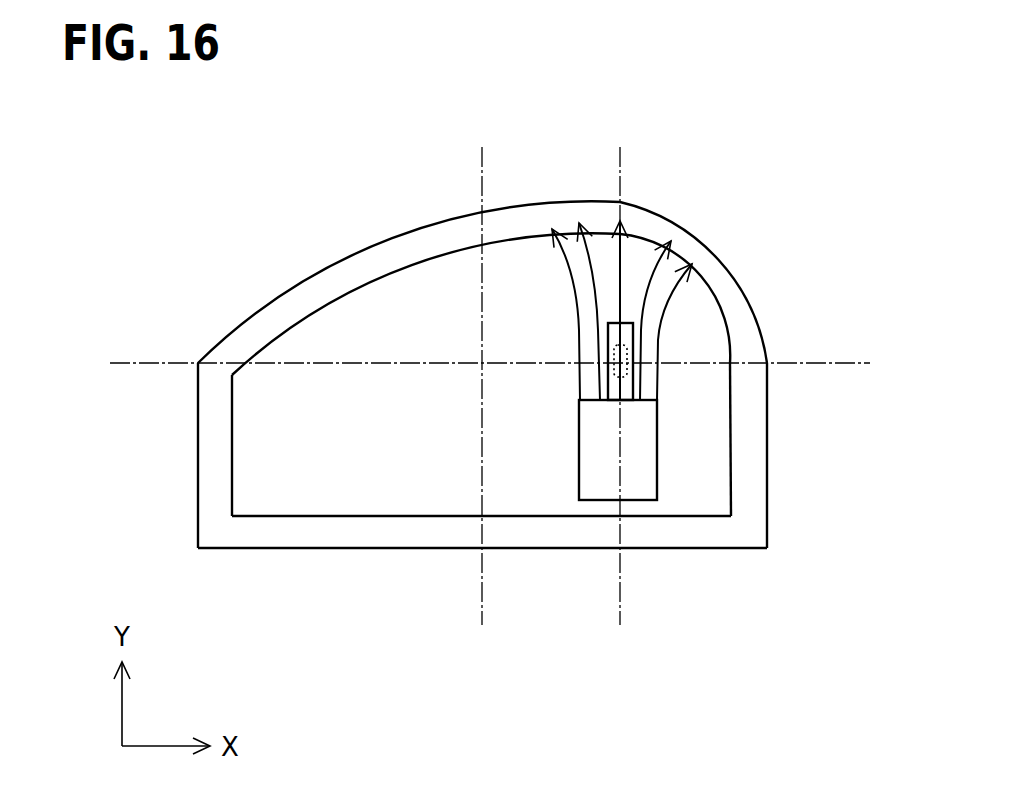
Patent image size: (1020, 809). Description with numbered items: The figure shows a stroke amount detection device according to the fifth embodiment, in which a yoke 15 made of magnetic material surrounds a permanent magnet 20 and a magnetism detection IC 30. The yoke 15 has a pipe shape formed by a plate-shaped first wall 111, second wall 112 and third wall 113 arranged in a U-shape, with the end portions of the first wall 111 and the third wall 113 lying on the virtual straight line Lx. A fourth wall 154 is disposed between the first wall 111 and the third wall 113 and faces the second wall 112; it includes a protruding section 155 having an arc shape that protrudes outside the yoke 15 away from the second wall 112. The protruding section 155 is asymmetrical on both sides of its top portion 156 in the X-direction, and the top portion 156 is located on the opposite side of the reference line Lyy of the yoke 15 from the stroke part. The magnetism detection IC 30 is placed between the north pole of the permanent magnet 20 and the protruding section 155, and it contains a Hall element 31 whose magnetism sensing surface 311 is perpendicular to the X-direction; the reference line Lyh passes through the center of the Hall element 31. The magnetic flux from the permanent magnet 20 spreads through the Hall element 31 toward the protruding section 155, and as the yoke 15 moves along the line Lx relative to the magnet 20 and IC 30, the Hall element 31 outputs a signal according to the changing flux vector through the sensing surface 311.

The yoke 15 is at (490, 401).
The first wall 111 is at (213, 487).
The second wall 112 is at (387, 540).
The third wall 113 is at (758, 468).
The fourth wall 154 is at (385, 257).
The protruding section 155 is at (333, 280).
The top portion 156 is at (630, 220).
The permanent magnet 20 is at (590, 463).
The magnetism detection IC 30 is at (613, 386).
The Hall element 31 is at (612, 349).
The magnetism sensing surface 311 is at (610, 375).
The virtual straight line Lx is at (827, 362).
The reference line of the yoke Lyy is at (477, 185).
The reference line of the Hall element Lyh is at (622, 185).